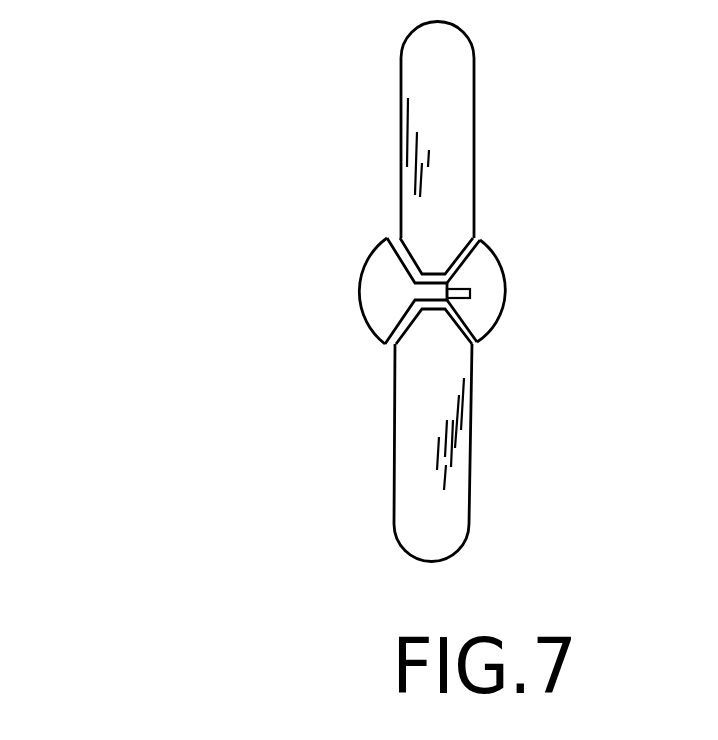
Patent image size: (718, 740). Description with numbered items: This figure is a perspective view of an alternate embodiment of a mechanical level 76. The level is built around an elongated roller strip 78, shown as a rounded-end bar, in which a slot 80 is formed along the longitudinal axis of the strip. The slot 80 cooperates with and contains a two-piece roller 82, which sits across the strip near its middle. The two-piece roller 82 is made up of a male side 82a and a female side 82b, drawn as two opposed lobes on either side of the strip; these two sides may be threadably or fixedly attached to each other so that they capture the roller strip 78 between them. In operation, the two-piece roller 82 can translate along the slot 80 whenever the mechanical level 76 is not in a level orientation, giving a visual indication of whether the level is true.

The mechanical level 76 is at (338, 66).
The roller strip 78 is at (460, 85).
The slot 80 is at (484, 228).
The two-piece roller 82 is at (515, 246).
The male side 82a is at (362, 272).
The female side 82b is at (505, 290).